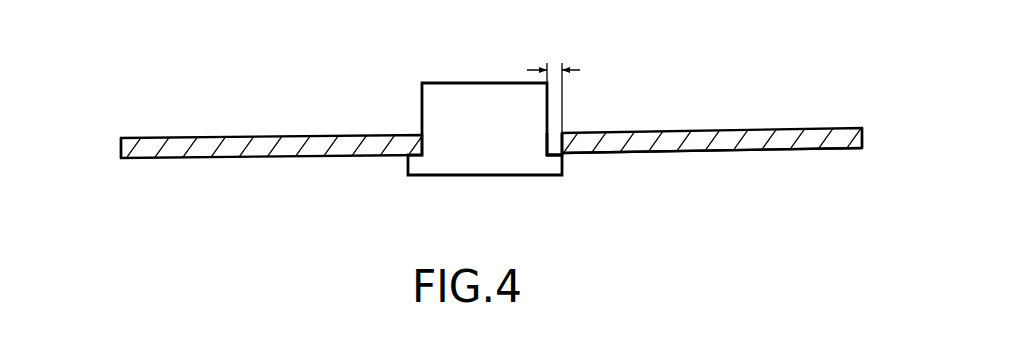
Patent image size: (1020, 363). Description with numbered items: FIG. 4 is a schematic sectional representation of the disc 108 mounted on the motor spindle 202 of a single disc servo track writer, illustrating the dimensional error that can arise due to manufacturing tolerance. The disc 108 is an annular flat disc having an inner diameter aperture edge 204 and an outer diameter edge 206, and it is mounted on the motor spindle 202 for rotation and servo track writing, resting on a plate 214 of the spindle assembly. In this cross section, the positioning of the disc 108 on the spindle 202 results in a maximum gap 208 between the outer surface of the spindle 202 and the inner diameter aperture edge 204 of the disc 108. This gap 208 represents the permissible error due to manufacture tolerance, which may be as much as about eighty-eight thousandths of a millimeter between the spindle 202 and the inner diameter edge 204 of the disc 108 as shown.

The disc 108 is at (657, 152).
The motor spindle 202 is at (425, 176).
The inner diameter aperture edge 204 is at (561, 142).
The outer diameter edge 206 is at (120, 146).
The maximum gap 208 is at (571, 94).
The plate 214 is at (182, 138).